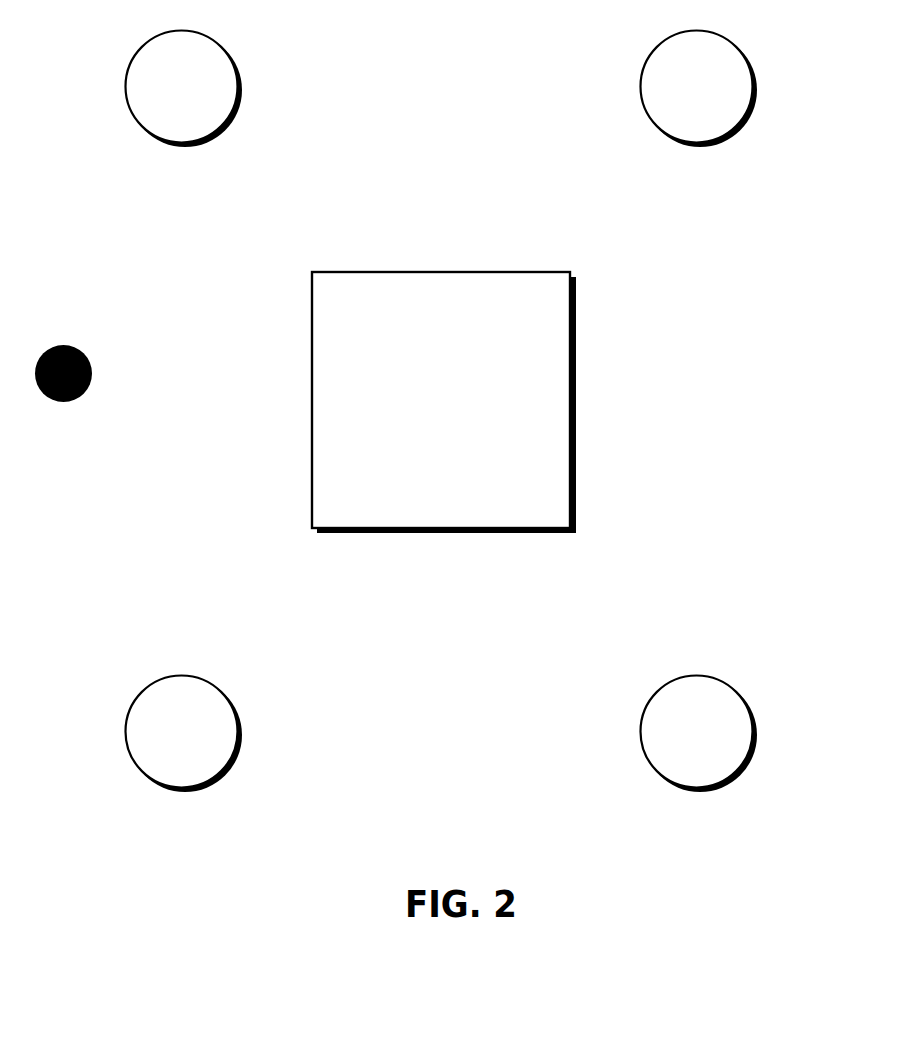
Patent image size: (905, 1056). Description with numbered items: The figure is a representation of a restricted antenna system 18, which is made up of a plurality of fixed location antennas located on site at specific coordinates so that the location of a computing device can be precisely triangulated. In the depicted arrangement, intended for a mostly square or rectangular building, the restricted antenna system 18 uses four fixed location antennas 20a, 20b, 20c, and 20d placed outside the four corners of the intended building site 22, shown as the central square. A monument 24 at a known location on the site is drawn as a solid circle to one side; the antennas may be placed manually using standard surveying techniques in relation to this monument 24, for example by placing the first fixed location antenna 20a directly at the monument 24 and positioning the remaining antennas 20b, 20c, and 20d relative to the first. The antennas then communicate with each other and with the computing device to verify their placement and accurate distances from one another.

The restricted antenna system 18 is at (797, 795).
The fixed location antenna 20a is at (183, 147).
The fixed location antenna 20b is at (701, 147).
The fixed location antenna 20c is at (700, 792).
The fixed location antenna 20d is at (184, 792).
The intended building site 22 is at (444, 402).
The monument 24 is at (65, 402).